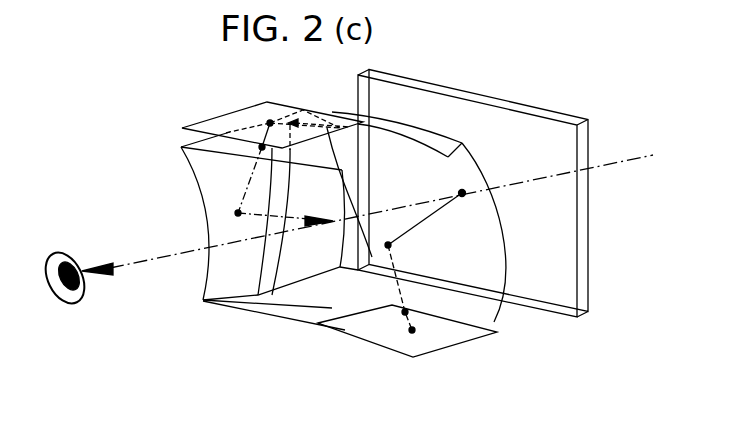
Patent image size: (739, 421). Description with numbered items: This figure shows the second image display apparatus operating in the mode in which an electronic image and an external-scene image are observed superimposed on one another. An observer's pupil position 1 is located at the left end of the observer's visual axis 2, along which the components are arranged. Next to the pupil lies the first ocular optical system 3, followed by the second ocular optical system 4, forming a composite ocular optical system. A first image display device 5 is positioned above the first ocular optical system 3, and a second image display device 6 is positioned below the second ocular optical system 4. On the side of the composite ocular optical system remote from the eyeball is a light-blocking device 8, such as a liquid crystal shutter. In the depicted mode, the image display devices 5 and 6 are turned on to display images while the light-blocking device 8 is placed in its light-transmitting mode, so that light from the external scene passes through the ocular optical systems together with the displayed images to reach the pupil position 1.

The pupil position 1 is at (78, 267).
The observer's visual axis 2 is at (157, 262).
The first ocular optical system 3 is at (207, 198).
The second ocular optical system 4 is at (485, 263).
The first image display device 5 is at (252, 115).
The second image display device 6 is at (448, 340).
The light-blocking device 8 is at (570, 240).